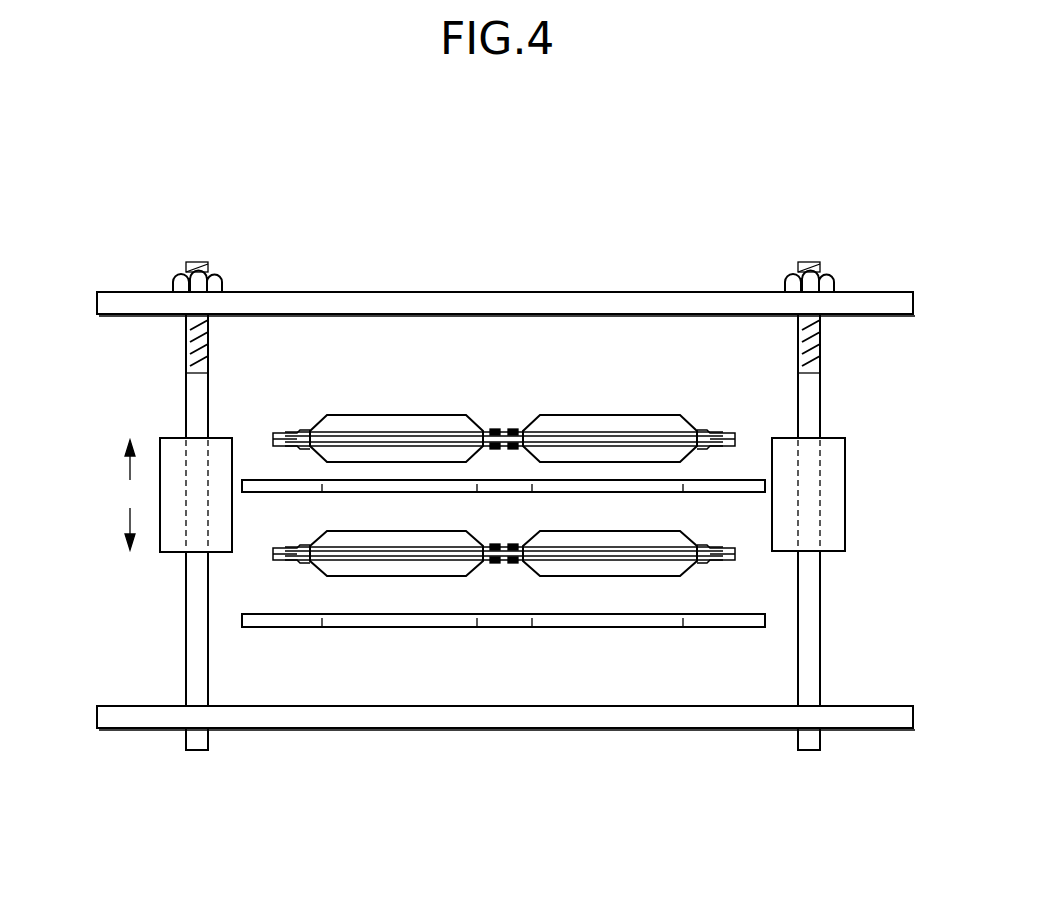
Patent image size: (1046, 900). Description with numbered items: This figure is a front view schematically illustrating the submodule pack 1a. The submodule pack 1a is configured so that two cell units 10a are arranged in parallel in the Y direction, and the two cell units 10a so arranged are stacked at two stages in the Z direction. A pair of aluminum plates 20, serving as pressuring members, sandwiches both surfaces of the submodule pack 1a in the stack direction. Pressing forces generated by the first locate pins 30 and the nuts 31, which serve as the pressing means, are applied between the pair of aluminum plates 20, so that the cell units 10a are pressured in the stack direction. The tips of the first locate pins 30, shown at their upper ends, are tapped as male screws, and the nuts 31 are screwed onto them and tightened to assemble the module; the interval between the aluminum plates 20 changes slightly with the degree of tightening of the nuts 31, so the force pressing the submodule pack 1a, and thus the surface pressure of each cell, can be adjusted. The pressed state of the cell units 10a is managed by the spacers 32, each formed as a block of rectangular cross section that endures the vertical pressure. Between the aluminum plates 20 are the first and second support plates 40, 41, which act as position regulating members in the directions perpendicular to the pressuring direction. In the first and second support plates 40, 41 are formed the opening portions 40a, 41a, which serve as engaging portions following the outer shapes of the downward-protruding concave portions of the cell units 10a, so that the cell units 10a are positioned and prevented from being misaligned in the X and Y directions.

The submodule pack 1a is at (906, 236).
The cell unit 10a is at (372, 414).
The aluminum plate 20 is at (615, 292).
The first locate pin 30 is at (186, 368).
The nut 31 is at (178, 280).
The spacer 32 is at (172, 554).
The first support plate 40 is at (697, 628).
The opening portion 40a is at (460, 627).
The second support plate 41 is at (750, 479).
The opening portion 41a is at (461, 484).